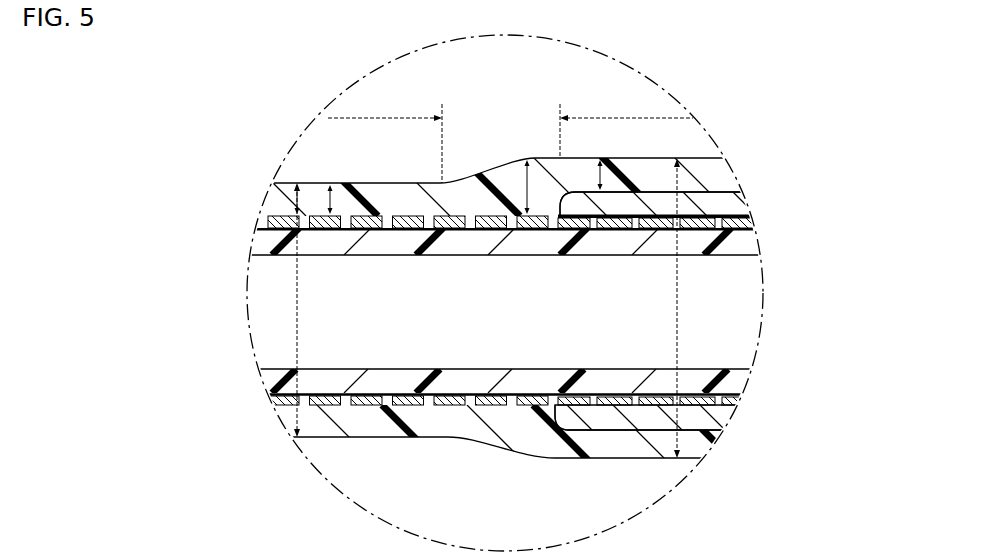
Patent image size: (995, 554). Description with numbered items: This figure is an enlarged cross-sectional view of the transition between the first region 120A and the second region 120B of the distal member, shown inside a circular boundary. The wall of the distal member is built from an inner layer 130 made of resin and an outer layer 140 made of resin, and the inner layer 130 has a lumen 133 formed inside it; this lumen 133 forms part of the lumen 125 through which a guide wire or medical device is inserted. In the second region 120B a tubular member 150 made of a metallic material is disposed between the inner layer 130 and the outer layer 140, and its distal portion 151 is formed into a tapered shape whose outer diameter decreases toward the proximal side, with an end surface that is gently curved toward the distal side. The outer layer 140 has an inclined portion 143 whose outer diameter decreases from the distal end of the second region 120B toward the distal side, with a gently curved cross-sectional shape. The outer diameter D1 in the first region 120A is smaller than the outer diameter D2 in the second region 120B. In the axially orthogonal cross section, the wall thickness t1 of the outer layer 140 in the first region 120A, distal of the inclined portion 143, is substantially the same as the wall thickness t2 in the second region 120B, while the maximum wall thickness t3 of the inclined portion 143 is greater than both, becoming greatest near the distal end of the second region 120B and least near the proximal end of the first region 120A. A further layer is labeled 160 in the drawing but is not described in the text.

The first region 120A is at (385, 133).
The second region 120B is at (626, 120).
The lumen 125 is at (424, 479).
The inner layer 130 is at (733, 256).
The lumen 133 is at (386, 328).
The outer layer 140 is at (711, 166).
The inclined portion 143 is at (476, 184).
The tubular member 150 is at (740, 190).
The distal portion 151 is at (563, 240).
The electrode layer 160 is at (745, 233).
The wall thickness t1 is at (332, 197).
The wall thickness t2 is at (604, 172).
The maximum wall thickness t3 is at (524, 165).
The outer diameter D1 is at (281, 310).
The outer diameter D2 is at (660, 308).